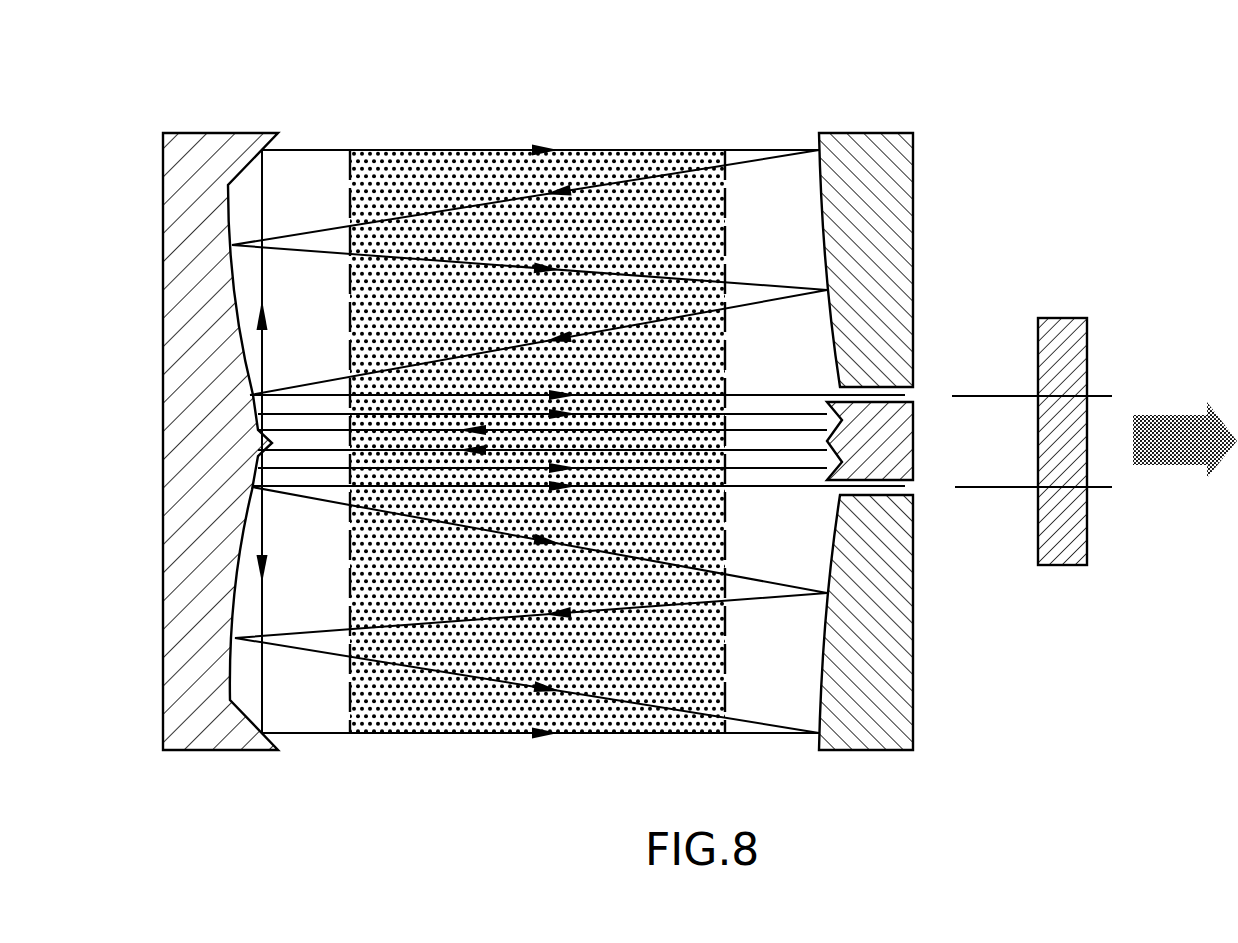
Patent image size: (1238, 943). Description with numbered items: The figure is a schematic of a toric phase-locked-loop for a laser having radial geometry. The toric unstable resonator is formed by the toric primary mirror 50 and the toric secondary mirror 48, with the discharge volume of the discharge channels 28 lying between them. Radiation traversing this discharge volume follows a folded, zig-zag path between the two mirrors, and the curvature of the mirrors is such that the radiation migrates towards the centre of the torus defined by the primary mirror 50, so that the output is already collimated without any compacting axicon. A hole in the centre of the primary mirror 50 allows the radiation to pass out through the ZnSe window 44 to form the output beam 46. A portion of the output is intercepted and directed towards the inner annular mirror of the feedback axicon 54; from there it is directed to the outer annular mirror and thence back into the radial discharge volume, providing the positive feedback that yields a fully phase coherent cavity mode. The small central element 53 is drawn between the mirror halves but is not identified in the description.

The discharge channels 28 is at (452, 178).
The ZnSe window 44 is at (1072, 582).
The output beam 46 is at (1175, 395).
The toric secondary mirror 48 is at (186, 770).
The toric primary mirror 50 is at (888, 764).
The central mirror element 53 is at (929, 398).
The feedback axicon 54 is at (238, 118).